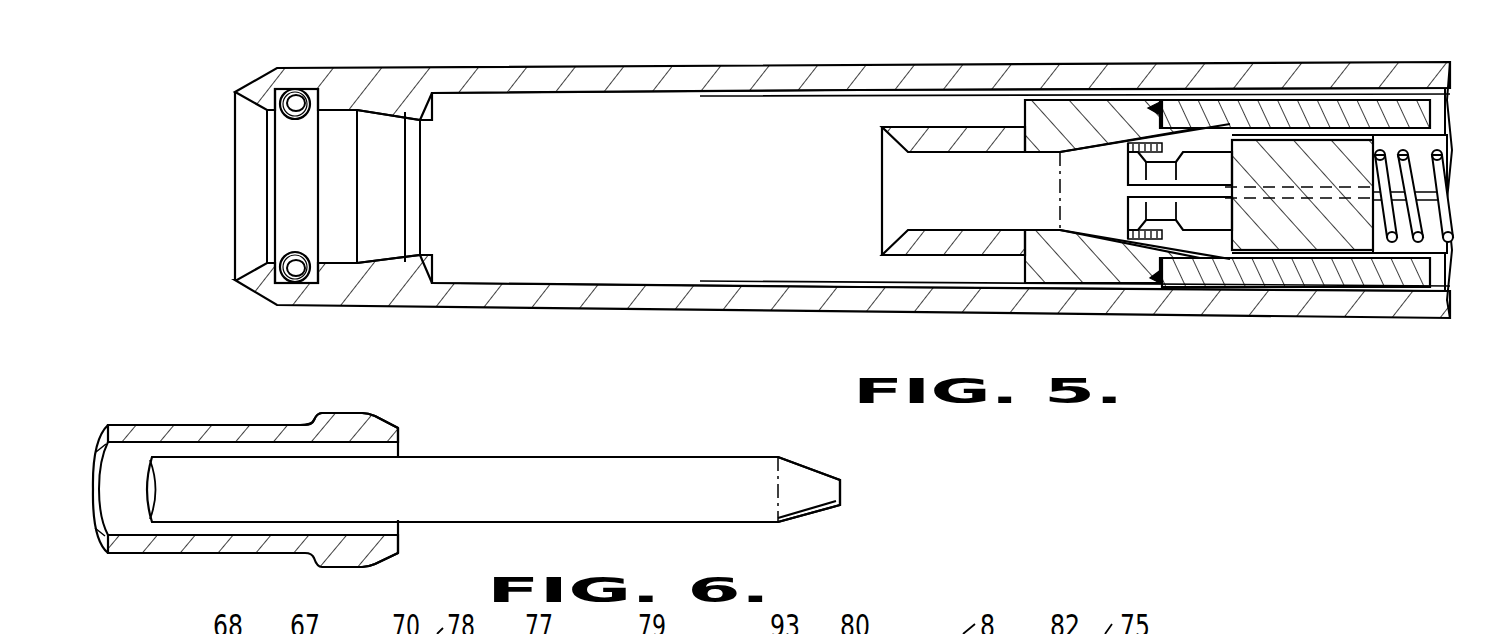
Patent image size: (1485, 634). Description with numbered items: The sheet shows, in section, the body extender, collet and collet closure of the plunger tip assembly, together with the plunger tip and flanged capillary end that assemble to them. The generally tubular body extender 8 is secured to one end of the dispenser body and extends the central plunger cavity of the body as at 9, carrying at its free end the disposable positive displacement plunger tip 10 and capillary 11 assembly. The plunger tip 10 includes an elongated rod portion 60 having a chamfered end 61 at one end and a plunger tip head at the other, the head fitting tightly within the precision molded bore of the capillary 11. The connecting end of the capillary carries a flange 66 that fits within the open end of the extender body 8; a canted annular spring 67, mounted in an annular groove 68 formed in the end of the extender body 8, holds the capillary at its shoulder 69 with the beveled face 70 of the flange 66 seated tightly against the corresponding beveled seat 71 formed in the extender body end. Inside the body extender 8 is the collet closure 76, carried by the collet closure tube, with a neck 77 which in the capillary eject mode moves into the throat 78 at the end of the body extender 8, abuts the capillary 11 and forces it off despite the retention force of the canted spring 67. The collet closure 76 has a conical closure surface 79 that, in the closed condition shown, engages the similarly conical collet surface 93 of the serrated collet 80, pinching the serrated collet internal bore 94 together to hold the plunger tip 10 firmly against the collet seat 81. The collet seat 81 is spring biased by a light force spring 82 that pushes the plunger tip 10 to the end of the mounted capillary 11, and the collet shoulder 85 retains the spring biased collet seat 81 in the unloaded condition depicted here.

In FIG. 5, the body extender 8 is at (664, 67).
In FIG. 5, the extended plunger cavity 9 is at (692, 201).
In FIG. 6, the plunger tip 10 is at (595, 448).
In FIG. 6, the capillary 11 is at (154, 420).
In FIG. 6, the rod portion 60 is at (690, 506).
In FIG. 6, the chamfered end 61 is at (804, 472).
In FIG. 6, the flange 66 is at (338, 420).
In FIG. 5, the canted annular spring 67 is at (296, 90).
In FIG. 5, the annular groove 68 is at (277, 85).
In FIG. 6, the shoulder 69 is at (312, 420).
In FIG. 6, the beveled face 70 is at (393, 412).
In FIG. 5, the beveled seat 71 is at (379, 123).
In FIG. 5, the collet closure 76 is at (1077, 137).
In FIG. 5, the neck 77 is at (957, 128).
In FIG. 5, the throat 78 is at (420, 123).
In FIG. 5, the conical closure surface 79 is at (1098, 150).
In FIG. 5, the serrated collet 80 is at (1207, 247).
In FIG. 5, the collet seat 81 is at (1308, 180).
In FIG. 5, the light force spring 82 is at (1422, 240).
In FIG. 5, the collet shoulder 85 is at (1222, 128).
In FIG. 5, the conical collet surface 93 is at (1143, 252).
In FIG. 5, the serrated collet internal bore 94 is at (1153, 216).